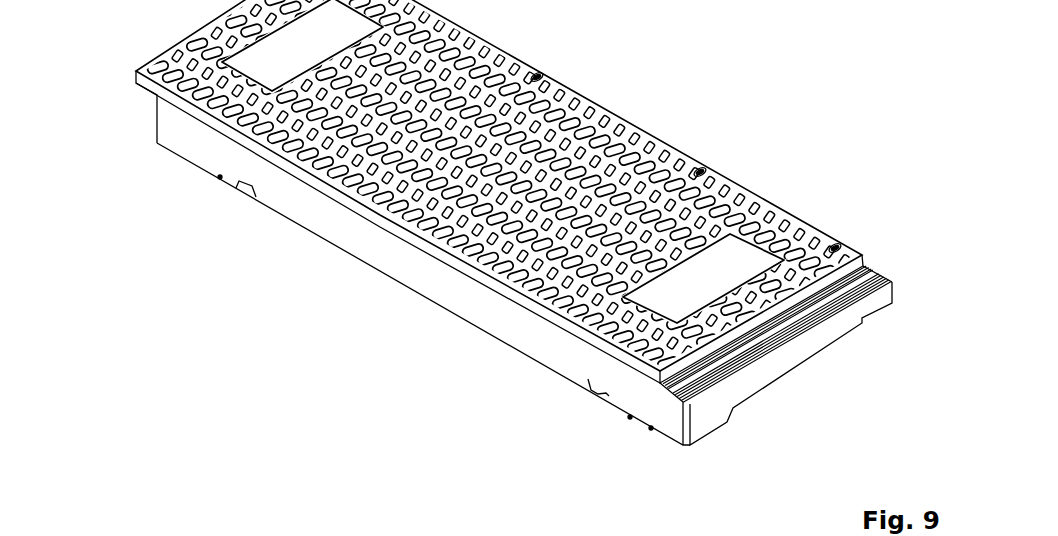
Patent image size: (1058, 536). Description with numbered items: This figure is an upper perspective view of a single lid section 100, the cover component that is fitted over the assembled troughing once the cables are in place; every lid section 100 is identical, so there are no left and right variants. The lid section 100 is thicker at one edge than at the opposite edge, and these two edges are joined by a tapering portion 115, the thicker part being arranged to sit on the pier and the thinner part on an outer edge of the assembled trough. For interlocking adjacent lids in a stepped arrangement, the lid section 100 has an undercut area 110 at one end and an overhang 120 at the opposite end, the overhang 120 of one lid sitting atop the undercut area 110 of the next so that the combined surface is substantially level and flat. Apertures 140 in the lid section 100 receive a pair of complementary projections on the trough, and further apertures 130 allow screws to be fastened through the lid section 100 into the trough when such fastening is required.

The lid section 100 is at (302, 287).
The undercut area 110 is at (687, 383).
The tapering portion 115 is at (790, 382).
The overhang 120 is at (152, 100).
The apertures 130 is at (702, 157).
The apertures 140 is at (250, 193).